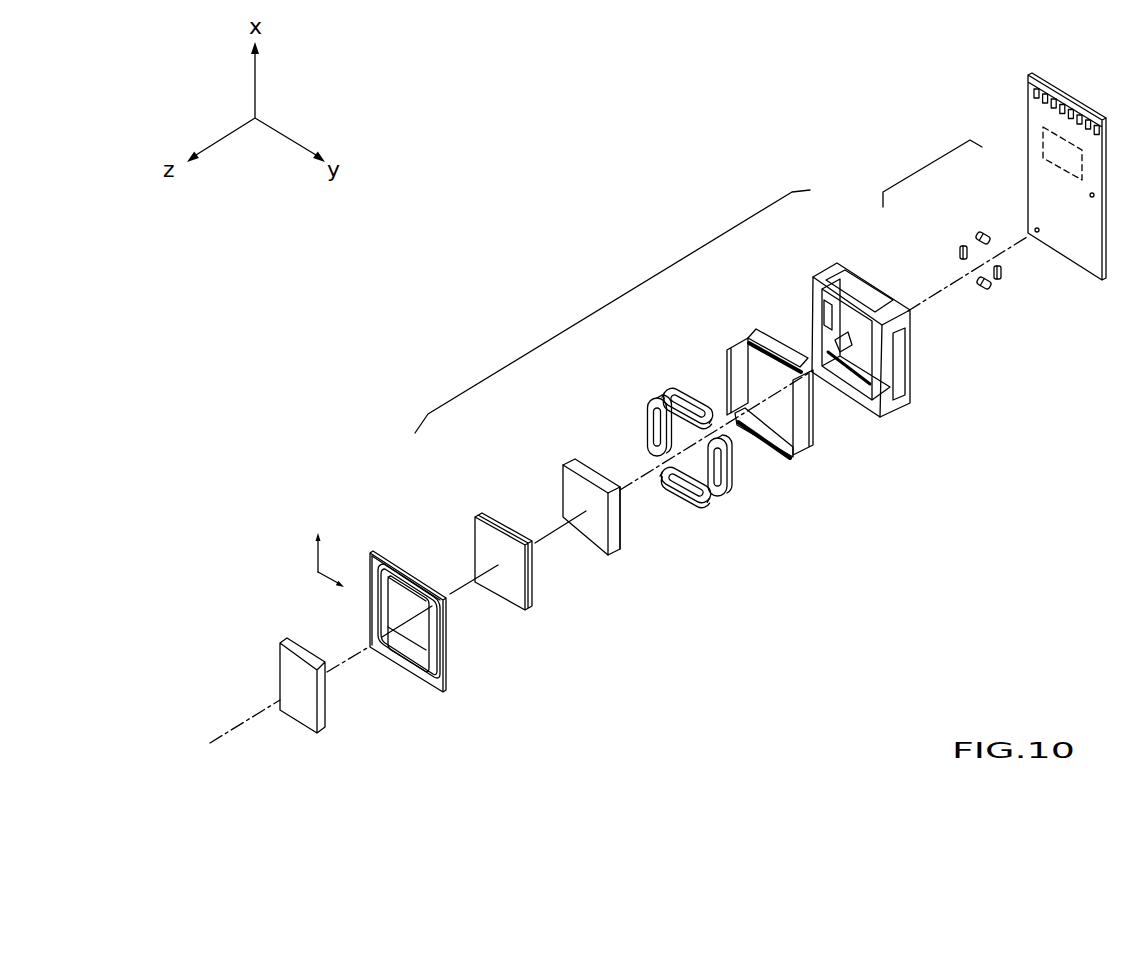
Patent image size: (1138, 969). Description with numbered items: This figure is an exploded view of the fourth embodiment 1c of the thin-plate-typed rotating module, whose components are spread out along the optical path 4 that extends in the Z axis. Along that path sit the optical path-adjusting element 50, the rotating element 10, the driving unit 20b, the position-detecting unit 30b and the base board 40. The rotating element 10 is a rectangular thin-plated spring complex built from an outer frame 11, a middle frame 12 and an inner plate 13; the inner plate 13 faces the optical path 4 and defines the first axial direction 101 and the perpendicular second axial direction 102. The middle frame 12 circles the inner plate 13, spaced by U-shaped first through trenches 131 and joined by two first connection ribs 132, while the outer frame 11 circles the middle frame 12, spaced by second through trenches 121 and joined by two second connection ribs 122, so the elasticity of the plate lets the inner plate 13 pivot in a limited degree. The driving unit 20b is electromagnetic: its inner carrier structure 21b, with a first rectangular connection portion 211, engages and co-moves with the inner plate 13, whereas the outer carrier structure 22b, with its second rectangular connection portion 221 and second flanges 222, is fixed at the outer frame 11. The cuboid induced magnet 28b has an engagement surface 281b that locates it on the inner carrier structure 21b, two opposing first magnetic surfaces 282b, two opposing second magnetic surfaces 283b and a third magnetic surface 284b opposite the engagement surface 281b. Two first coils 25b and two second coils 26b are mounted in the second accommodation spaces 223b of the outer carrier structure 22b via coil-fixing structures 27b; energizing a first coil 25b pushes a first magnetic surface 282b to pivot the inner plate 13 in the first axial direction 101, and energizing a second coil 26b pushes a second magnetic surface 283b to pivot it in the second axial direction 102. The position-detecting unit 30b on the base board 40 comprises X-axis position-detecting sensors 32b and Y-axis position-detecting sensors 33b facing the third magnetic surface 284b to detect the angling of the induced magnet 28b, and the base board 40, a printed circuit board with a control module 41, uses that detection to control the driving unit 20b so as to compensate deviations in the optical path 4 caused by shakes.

The fourth embodiment of the thin-plate-typed rotating module 1c is at (487, 261).
The optical path 4 is at (236, 728).
The rotating element 10 is at (350, 539).
The first axial direction 101 is at (318, 553).
The second axial direction 102 is at (322, 578).
The outer frame 11 is at (444, 682).
The middle frame 12 is at (432, 660).
The inner plate 13 is at (400, 628).
The second through trench 121 is at (388, 568).
The second connection rib 122 is at (375, 603).
The first through trench 131 is at (420, 612).
The first connection rib 132 is at (400, 655).
The optical path-adjusting element 50 is at (288, 638).
The driving unit 20b is at (611, 303).
The inner carrier structure 21b is at (480, 513).
The first rectangular connection portion 211 is at (507, 587).
The induced magnet 28b is at (555, 448).
The engagement surface 281b is at (585, 510).
The first magnetic surface 282b is at (560, 493).
The second magnetic surface 283b is at (584, 470).
The third magnetic surface 284b is at (622, 498).
The first coil 25b is at (649, 425).
The second coil 26b is at (672, 395).
The coil-fixing structure 27b is at (758, 350).
The outer carrier structure 22b is at (815, 278).
The second rectangular connection portion 221 is at (888, 410).
The second flange 222 is at (840, 266).
The second accommodation space 223b is at (830, 322).
The position-detecting unit 30b is at (932, 166).
The X-axis position-detecting sensor 32b is at (962, 253).
The Y-axis position-detecting sensor 33b is at (985, 237).
The base board 40 is at (1030, 100).
The control module 41 is at (1043, 158).